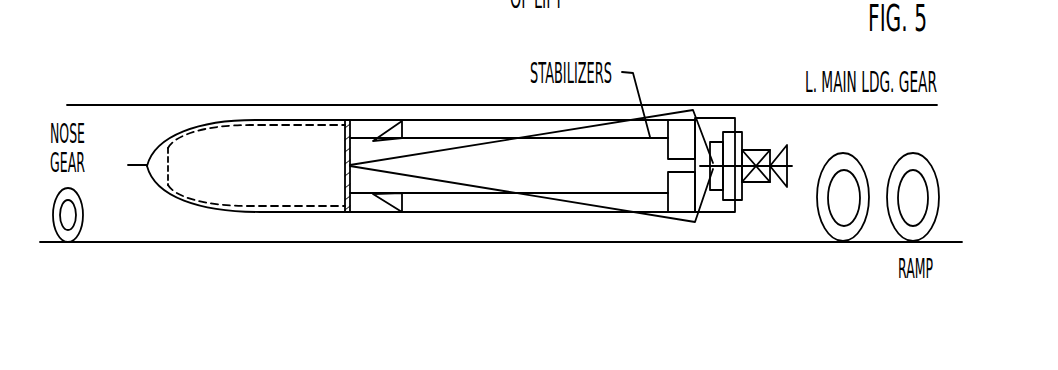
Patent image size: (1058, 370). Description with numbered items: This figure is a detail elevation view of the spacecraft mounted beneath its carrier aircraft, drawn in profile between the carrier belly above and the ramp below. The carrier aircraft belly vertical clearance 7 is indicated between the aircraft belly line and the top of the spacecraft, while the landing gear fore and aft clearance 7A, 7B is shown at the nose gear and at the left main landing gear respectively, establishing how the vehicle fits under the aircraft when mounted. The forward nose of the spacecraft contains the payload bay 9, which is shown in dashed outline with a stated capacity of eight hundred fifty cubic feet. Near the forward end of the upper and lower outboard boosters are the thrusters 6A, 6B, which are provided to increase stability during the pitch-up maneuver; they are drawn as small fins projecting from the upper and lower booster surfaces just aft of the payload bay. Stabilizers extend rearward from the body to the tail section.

The carrier aircraft belly vertical clearance 7 is at (180, 103).
The landing gear fore clearance 7A is at (86, 211).
The landing gear aft clearance 7B is at (878, 179).
The payload bay 9 is at (219, 152).
The thruster 6A is at (373, 142).
The thruster 6B is at (385, 198).